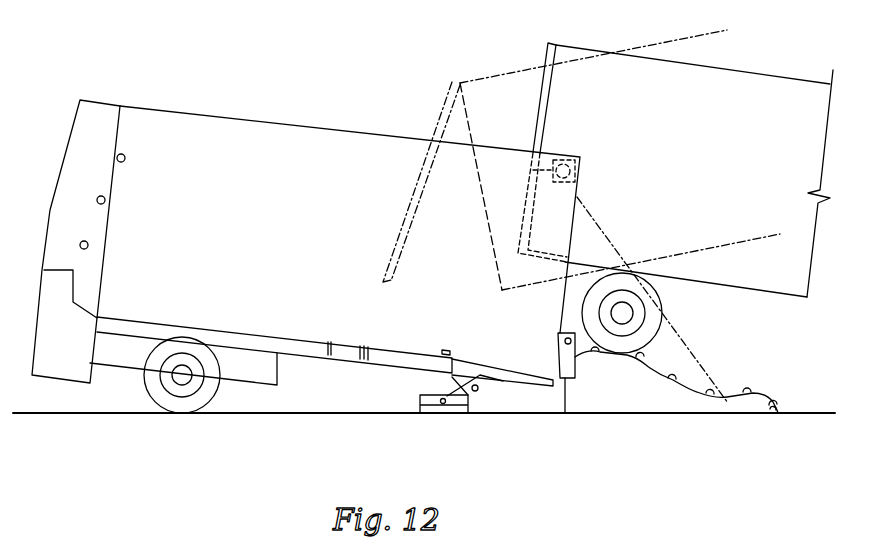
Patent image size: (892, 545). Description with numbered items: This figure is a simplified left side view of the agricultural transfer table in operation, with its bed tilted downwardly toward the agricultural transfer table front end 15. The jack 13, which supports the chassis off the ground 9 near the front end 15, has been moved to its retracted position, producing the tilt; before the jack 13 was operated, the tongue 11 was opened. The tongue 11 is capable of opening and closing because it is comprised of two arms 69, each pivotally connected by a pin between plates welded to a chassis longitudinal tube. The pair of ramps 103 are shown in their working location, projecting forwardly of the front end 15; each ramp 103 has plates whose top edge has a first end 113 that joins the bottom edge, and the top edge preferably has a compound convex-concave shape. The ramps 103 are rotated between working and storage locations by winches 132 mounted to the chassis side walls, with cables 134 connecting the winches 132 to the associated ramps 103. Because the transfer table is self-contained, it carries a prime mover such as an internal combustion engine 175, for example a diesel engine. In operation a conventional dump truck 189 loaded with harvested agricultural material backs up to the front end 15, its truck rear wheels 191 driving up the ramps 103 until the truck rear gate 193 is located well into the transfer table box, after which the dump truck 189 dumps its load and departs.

The ground 9 is at (805, 413).
The tongue 11 is at (375, 368).
The jack 13 is at (500, 390).
The agricultural transfer table front end 15 is at (578, 200).
The arms 69 is at (400, 370).
The ramps 103 is at (683, 383).
The first end of the top edge 113 is at (778, 407).
The winches 132 is at (523, 163).
The cables 134 is at (607, 238).
The engine 175 is at (252, 370).
The dump truck 189 is at (765, 72).
The truck rear wheels 191 is at (655, 320).
The truck rear gate 193 is at (547, 48).